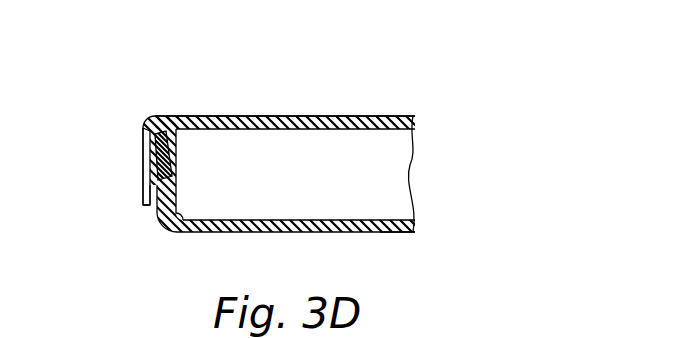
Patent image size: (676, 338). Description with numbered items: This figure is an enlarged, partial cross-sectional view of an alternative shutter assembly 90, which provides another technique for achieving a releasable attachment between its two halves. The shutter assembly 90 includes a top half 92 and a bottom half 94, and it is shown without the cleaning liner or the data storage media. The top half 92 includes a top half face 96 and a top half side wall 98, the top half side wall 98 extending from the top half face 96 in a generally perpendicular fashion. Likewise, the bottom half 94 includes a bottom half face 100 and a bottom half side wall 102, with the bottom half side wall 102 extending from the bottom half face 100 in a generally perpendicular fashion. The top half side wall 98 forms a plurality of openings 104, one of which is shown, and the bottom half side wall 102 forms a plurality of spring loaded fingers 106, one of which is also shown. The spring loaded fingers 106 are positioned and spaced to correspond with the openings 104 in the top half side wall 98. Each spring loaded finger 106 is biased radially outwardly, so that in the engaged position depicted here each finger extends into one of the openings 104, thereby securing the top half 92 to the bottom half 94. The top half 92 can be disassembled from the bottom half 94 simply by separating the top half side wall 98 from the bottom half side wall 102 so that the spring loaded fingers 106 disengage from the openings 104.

The shutter assembly 90 is at (410, 90).
The top half 92 is at (231, 112).
The bottom half 94 is at (392, 240).
The top half face 96 is at (308, 117).
The top half side wall 98 is at (142, 150).
The bottom half face 100 is at (311, 231).
The bottom half side wall 102 is at (170, 170).
The opening 104 is at (151, 192).
The spring loaded finger 106 is at (168, 155).